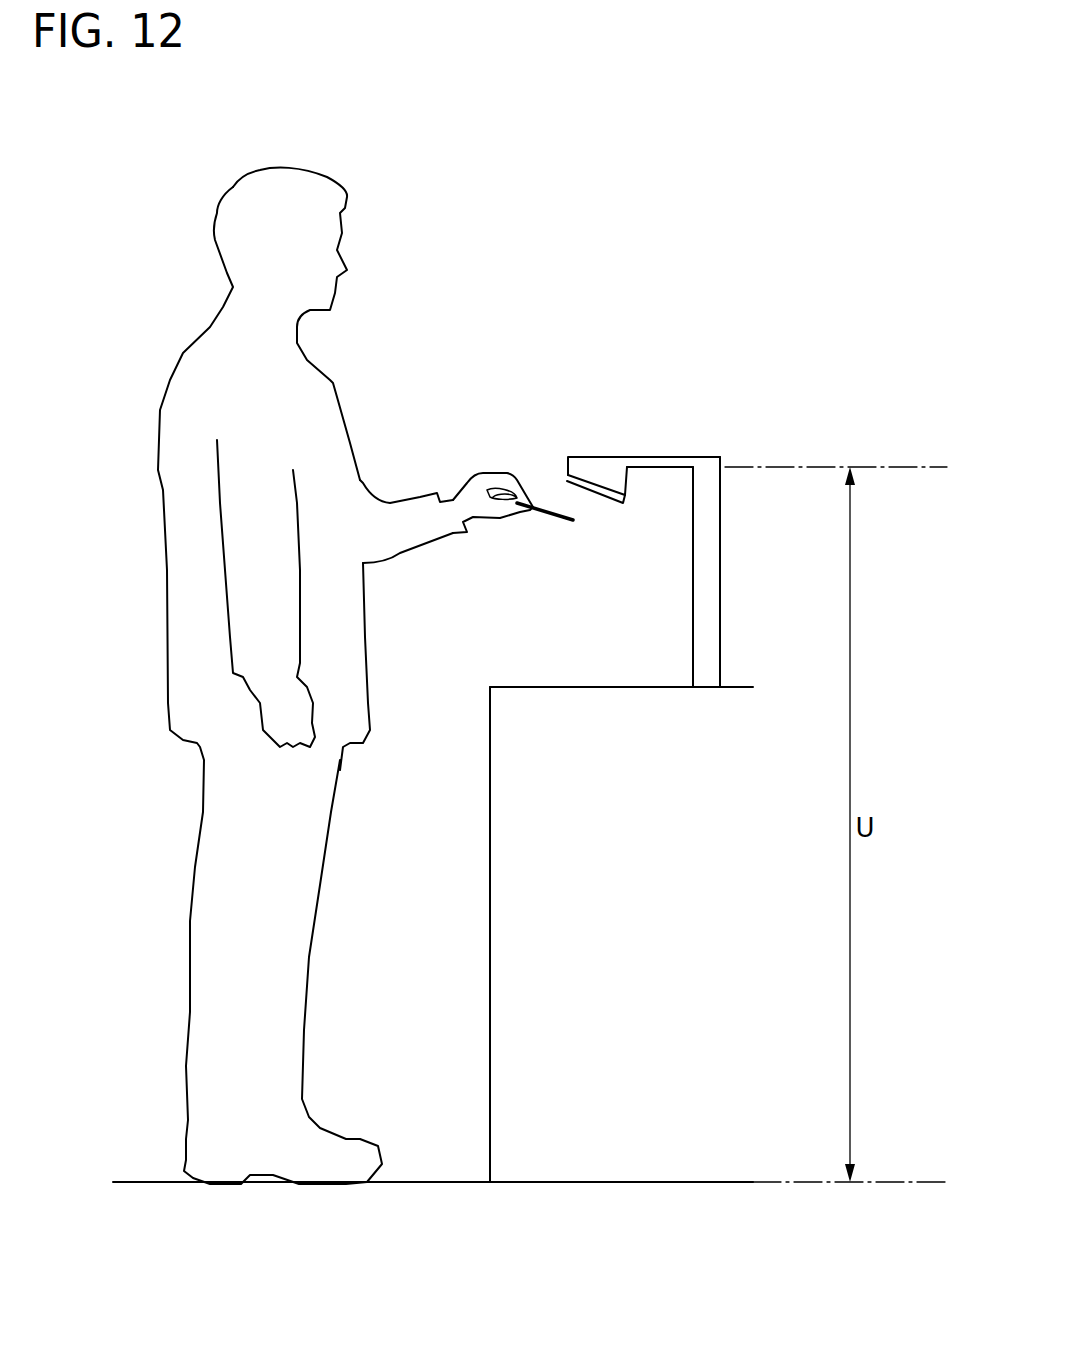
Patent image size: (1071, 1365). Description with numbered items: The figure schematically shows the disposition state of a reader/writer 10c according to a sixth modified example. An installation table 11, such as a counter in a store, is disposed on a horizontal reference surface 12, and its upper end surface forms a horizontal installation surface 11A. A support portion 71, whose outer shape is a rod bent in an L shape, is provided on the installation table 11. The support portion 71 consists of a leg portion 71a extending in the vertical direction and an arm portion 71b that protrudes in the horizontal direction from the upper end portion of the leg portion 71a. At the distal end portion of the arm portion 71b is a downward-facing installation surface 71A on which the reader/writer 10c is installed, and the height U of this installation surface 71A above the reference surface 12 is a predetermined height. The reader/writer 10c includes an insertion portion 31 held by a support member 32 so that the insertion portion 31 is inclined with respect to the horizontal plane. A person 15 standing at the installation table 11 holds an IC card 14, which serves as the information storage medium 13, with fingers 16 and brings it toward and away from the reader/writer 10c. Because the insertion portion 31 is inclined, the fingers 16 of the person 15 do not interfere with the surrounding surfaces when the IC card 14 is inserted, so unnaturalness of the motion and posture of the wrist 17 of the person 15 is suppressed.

The person 15 is at (240, 183).
The wrist 17 is at (453, 497).
The fingers 16 is at (523, 483).
The IC card 14 is at (555, 510).
The information storage medium 13 is at (584, 440).
The reader/writer 10c is at (760, 342).
The insertion portion 31 is at (597, 492).
The support member 32 is at (618, 477).
The support portion 71 is at (897, 307).
The leg portion 71a is at (713, 527).
The arm portion 71b is at (673, 458).
The installation surface 71A is at (658, 468).
The installation table 11 is at (498, 950).
The installation surface 11A is at (743, 687).
The reference surface 12 is at (148, 1180).